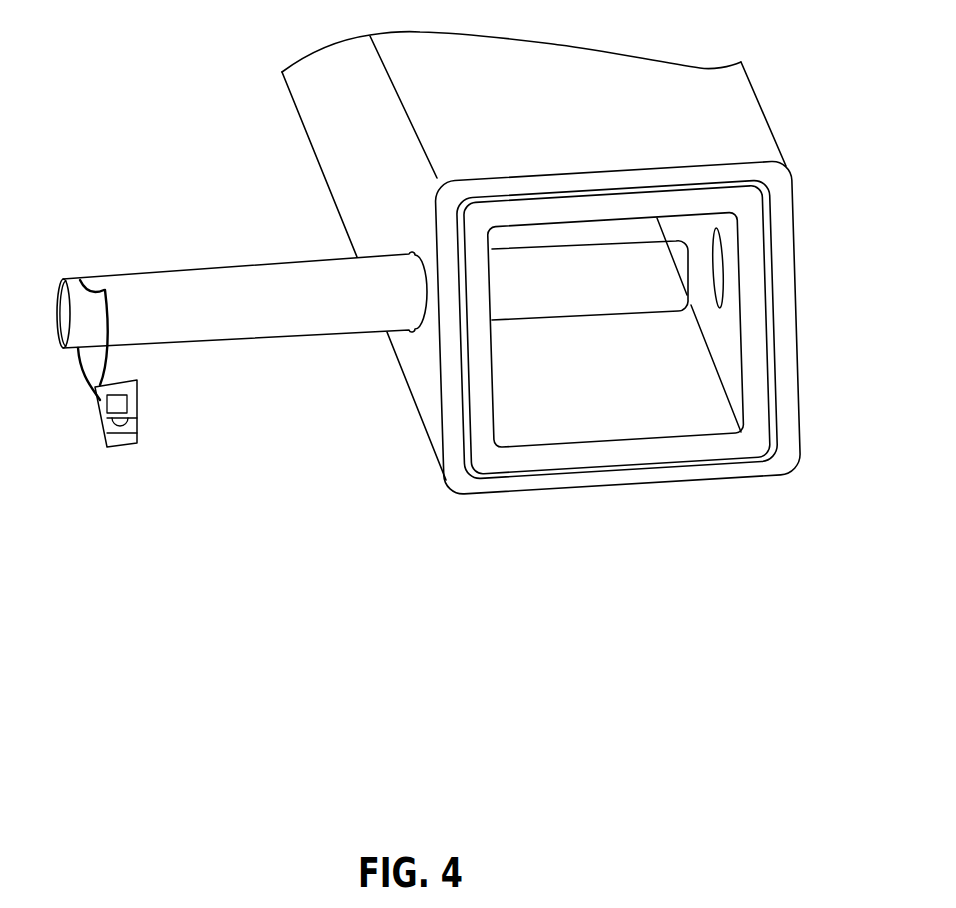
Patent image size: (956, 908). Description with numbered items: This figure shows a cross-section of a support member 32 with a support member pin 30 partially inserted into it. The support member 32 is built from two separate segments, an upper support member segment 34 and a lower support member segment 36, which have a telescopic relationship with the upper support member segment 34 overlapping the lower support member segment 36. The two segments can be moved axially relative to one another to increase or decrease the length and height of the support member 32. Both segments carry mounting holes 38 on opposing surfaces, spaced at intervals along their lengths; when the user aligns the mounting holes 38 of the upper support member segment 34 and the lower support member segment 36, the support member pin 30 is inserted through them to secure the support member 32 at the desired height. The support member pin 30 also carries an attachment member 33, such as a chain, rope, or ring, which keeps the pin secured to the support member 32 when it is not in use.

The support member pin 30 is at (240, 313).
The support member 32 is at (293, 145).
The attachment member 33 is at (115, 403).
The upper support member segment 34 is at (782, 222).
The lower support member segment 36 is at (747, 443).
The mounting holes 38 is at (719, 270).